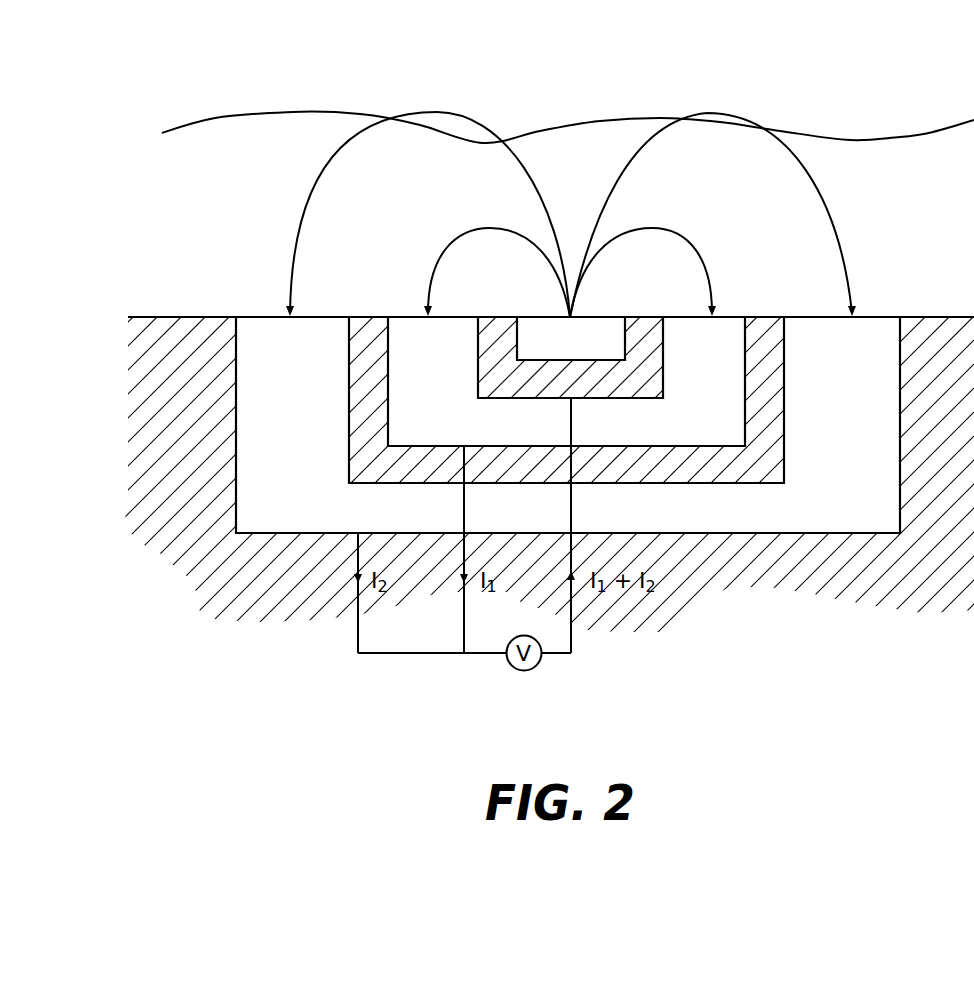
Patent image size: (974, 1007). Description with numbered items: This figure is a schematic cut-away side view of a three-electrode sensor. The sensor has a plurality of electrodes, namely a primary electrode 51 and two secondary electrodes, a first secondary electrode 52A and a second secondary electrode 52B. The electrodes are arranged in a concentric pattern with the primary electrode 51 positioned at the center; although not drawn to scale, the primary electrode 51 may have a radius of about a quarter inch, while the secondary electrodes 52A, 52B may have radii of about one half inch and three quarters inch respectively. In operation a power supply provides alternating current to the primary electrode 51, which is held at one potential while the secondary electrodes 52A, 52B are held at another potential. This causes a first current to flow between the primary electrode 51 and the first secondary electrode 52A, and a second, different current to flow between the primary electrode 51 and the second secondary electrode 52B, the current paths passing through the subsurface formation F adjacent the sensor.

The primary electrode 51 is at (603, 335).
The first secondary electrode 52A is at (722, 337).
The second secondary electrode 52B is at (878, 337).
The subsurface formation F is at (568, 188).